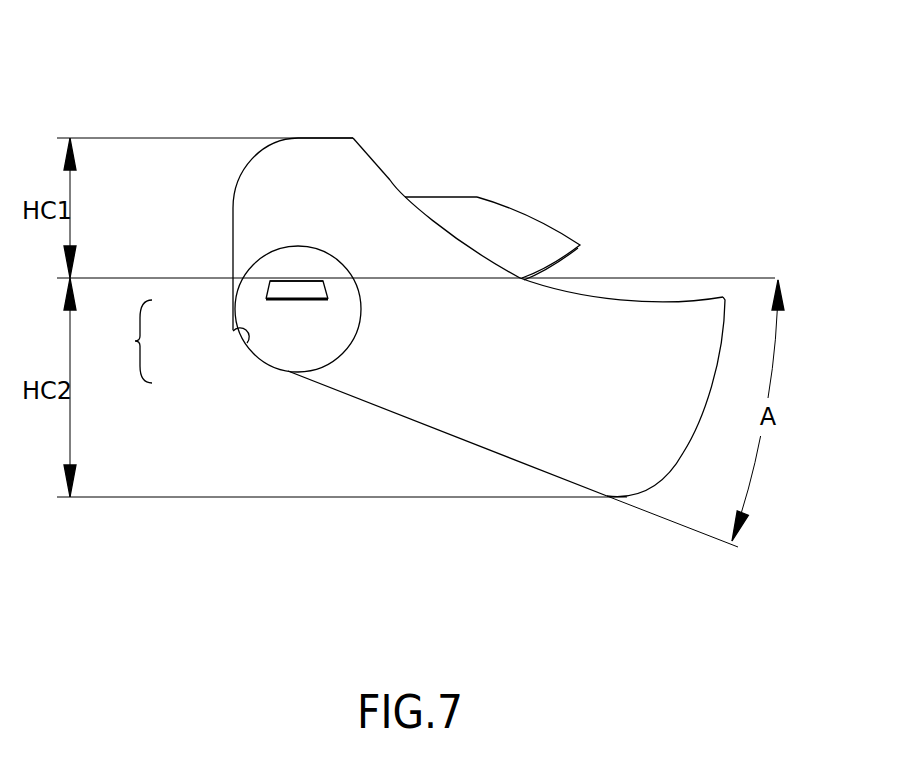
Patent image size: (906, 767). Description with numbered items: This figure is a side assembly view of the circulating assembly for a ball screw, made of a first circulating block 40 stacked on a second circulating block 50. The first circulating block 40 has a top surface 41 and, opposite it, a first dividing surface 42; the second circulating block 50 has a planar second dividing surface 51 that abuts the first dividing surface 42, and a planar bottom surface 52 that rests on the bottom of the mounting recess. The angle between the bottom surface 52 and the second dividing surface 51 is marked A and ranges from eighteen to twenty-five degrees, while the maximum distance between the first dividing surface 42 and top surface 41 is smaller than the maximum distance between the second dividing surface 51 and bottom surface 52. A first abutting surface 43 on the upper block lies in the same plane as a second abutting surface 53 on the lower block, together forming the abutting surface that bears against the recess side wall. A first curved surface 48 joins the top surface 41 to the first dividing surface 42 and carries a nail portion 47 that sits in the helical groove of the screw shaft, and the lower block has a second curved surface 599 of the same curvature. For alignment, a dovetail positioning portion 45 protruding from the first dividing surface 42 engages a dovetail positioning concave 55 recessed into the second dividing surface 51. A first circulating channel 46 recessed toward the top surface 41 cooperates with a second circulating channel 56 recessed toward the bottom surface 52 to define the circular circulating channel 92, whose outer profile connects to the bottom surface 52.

The first circulating block 40 is at (420, 325).
The top surface 41 is at (312, 137).
The first abutting surface 43 is at (358, 167).
The first curved surface 48 is at (390, 180).
The first dividing surface 42 is at (449, 205).
The second dividing surface 51 is at (443, 278).
The nail portion 47 is at (532, 240).
The second curved surface 599 is at (663, 302).
The second abutting surface 53 is at (550, 387).
The second circulating block 50 is at (527, 472).
The bottom surface 52 is at (468, 443).
The positioning portion 45 is at (296, 287).
The positioning concave 55 is at (285, 299).
The circulating channel 92 is at (213, 320).
The first circulating channel 46 is at (263, 257).
The second circulating channel 56 is at (233, 332).